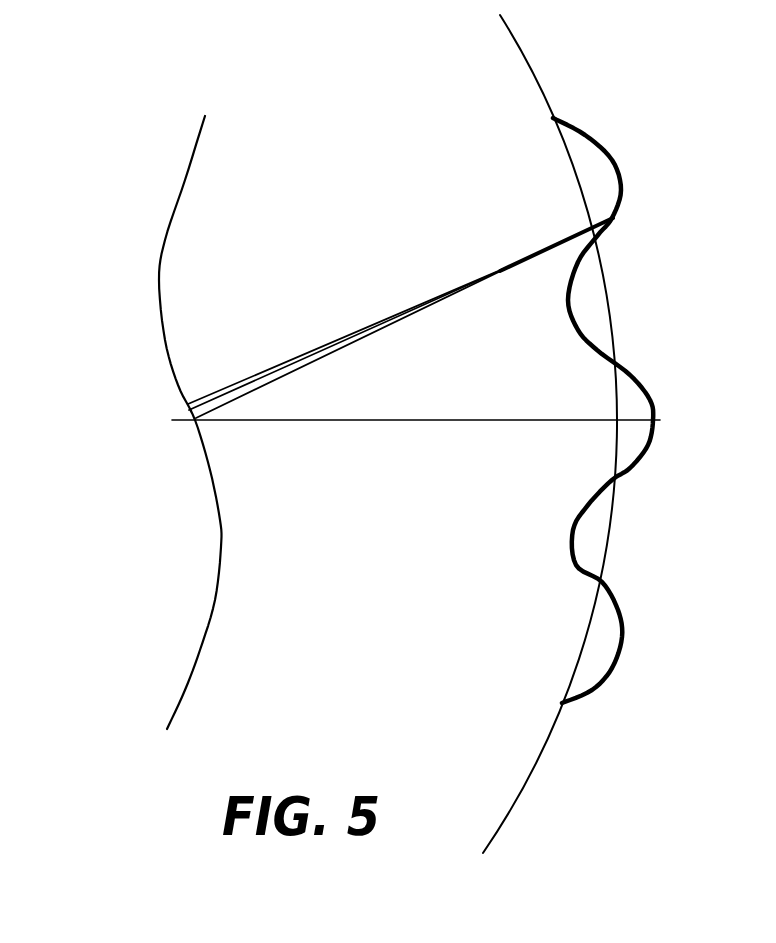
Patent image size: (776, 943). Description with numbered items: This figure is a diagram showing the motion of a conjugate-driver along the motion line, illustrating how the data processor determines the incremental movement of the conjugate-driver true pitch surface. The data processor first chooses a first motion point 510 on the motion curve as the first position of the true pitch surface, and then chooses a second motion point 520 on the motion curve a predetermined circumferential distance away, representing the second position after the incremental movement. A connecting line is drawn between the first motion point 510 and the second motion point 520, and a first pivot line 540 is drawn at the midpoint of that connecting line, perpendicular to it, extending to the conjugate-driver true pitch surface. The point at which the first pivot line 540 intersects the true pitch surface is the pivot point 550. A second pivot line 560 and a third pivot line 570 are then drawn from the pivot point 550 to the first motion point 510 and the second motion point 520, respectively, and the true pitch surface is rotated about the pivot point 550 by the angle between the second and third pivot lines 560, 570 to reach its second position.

The first motion point 510 is at (193, 421).
The second motion point 520 is at (192, 412).
The first pivot line 540 is at (227, 410).
The pivot point 550 is at (612, 222).
The second pivot line 560 is at (293, 370).
The third pivot line 570 is at (222, 392).